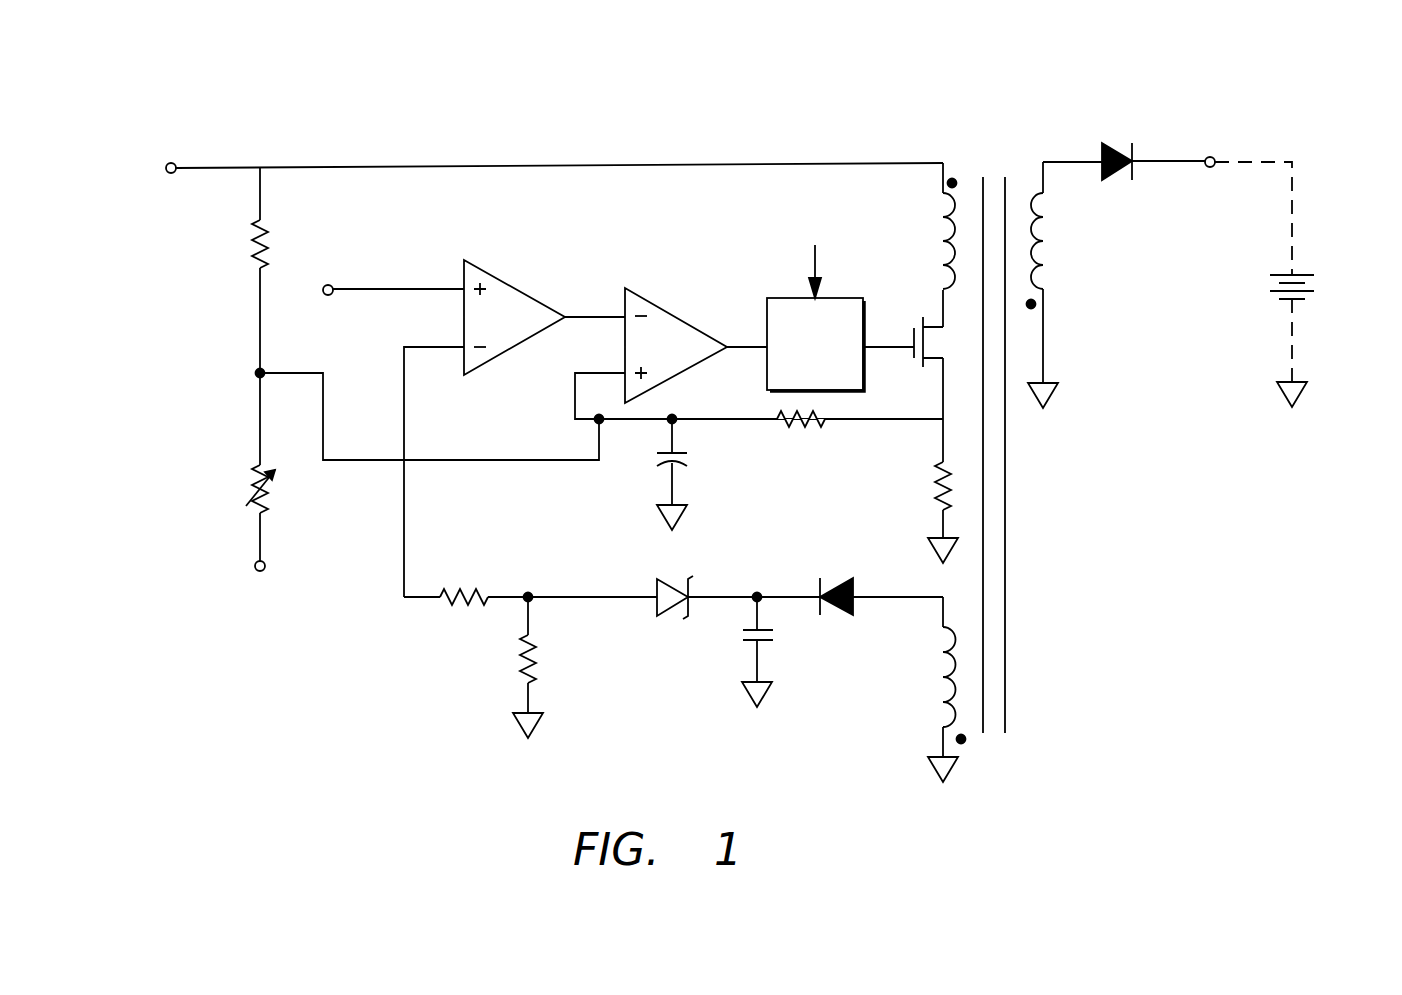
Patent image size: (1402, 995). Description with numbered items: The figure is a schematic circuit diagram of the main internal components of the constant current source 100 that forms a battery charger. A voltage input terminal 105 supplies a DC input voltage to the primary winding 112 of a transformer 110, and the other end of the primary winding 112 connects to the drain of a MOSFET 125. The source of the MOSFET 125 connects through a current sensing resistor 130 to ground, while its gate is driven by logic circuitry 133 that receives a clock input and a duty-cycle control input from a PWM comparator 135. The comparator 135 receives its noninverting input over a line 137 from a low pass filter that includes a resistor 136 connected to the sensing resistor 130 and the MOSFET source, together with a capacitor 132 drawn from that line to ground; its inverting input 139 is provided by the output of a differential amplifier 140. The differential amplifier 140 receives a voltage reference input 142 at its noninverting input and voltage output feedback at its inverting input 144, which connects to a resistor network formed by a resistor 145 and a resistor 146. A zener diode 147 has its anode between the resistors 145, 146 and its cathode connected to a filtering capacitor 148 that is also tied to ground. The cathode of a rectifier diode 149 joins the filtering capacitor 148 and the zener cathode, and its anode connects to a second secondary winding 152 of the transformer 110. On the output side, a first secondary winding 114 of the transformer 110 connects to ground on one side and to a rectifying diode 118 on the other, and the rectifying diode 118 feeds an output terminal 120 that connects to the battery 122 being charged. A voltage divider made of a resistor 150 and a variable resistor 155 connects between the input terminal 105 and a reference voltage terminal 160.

The constant current source 100 is at (1144, 56).
The voltage input terminal 105 is at (175, 174).
The transformer 110 is at (991, 159).
The primary winding 112 is at (947, 207).
The first secondary winding 114 is at (1040, 270).
The rectifying diode 118 is at (1110, 143).
The output terminal 120 is at (1210, 170).
The battery 122 is at (1306, 272).
The MOSFET 125 is at (913, 336).
The current sensing resistor 130 is at (937, 466).
The capacitor 132 is at (687, 465).
The logic circuitry 133 is at (792, 298).
The PWM comparator 135 is at (662, 300).
The resistor 136 is at (790, 420).
The line 137 is at (577, 381).
The inverting input 139 is at (597, 320).
The differential amplifier 140 is at (500, 353).
The voltage reference input 142 is at (397, 280).
The inverting input 144 is at (437, 346).
The resistor 145 is at (460, 595).
The resistor 146 is at (535, 665).
The zener diode 147 is at (692, 580).
The filtering capacitor 148 is at (752, 642).
The rectifier diode 149 is at (820, 582).
The resistor 150 is at (263, 222).
The second secondary winding 152 is at (945, 650).
The variable resistor 155 is at (256, 478).
The reference voltage terminal 160 is at (257, 565).